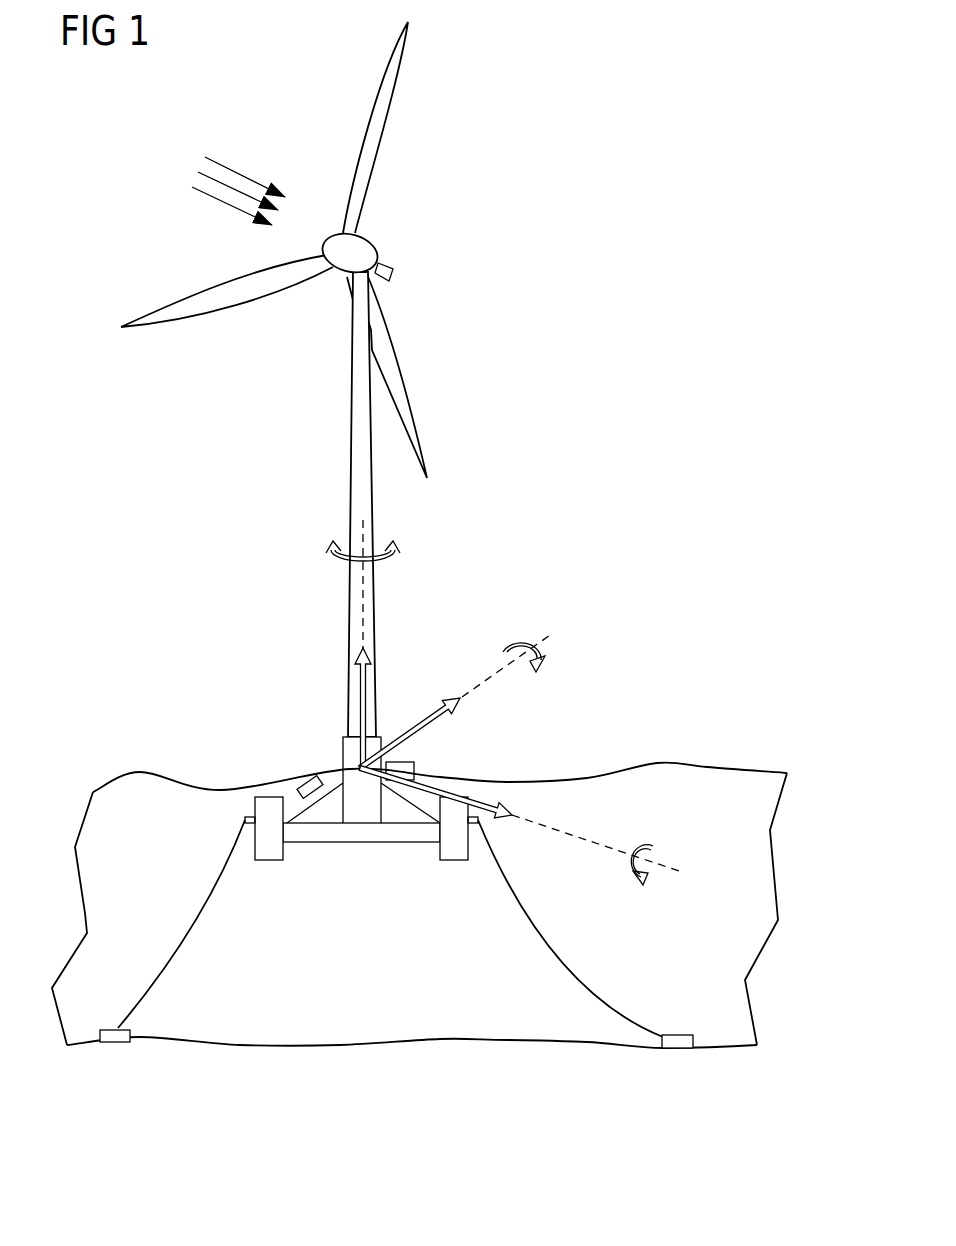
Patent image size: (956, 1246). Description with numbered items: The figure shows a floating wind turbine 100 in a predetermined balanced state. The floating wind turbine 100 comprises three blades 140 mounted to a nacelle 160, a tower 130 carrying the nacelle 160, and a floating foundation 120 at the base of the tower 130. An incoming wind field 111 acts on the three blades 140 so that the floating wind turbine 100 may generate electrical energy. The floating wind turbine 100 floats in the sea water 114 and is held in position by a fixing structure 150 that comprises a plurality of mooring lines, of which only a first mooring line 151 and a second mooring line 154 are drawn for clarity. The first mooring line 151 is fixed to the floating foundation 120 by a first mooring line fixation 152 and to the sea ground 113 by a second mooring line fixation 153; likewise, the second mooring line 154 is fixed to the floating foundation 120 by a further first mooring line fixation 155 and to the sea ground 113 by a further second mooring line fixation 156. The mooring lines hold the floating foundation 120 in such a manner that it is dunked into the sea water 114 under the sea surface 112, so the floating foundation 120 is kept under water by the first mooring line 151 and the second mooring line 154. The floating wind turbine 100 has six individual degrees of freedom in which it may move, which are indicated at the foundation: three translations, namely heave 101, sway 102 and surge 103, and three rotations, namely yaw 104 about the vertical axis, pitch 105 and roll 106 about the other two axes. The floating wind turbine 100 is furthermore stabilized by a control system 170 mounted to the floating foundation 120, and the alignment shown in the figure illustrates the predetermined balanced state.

The floating wind turbine 100 is at (478, 197).
The heave 101 is at (363, 680).
The sway 102 is at (433, 708).
The surge 103 is at (487, 805).
The yaw 104 is at (330, 553).
The pitch 105 is at (532, 640).
The roll 106 is at (648, 840).
The incoming wind field 111 is at (240, 173).
The sea surface 112 is at (705, 765).
The sea ground 113 is at (258, 1042).
The sea water 114 is at (762, 885).
The floating foundation 120 is at (268, 850).
The tower 130 is at (362, 440).
The blades 140 is at (395, 105).
The fixing structure 150 is at (409, 969).
The first mooring line 151 is at (213, 888).
The first mooring line fixation 152 is at (248, 817).
The second mooring line fixation 153 is at (115, 1045).
The second mooring line 154 is at (568, 957).
The further first mooring line fixation 155 is at (473, 823).
The further second mooring line fixation 156 is at (682, 1048).
The nacelle 160 is at (373, 242).
The control system 170 is at (308, 783).